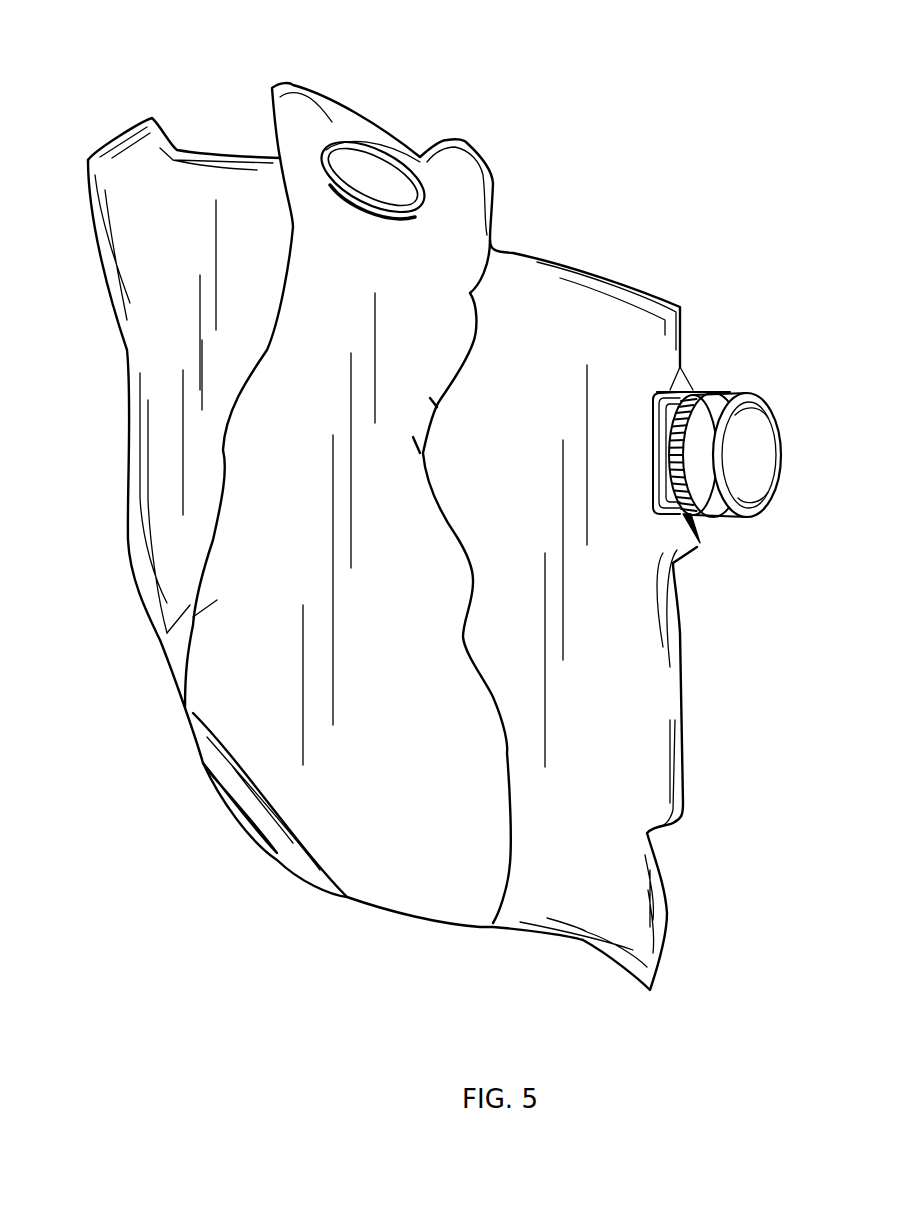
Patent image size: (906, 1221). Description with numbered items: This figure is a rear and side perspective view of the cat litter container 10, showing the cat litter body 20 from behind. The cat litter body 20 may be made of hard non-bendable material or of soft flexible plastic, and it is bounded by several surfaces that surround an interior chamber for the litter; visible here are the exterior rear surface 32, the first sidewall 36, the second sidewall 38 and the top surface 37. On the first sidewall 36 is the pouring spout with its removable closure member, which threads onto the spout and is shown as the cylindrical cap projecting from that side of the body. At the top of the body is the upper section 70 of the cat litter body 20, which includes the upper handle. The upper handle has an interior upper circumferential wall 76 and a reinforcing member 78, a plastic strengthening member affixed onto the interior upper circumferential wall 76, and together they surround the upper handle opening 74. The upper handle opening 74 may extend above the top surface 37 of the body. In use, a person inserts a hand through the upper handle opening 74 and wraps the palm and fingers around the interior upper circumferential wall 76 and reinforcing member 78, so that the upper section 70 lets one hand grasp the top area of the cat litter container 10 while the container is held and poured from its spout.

The cat litter container 10 is at (757, 366).
The cat litter body 20 is at (467, 228).
The exterior rear surface 32 is at (488, 433).
The first sidewall 36 is at (683, 325).
The top surface 37 is at (597, 267).
The second sidewall 38 is at (128, 400).
The upper section 70 is at (425, 126).
The upper handle opening 74 is at (385, 167).
The interior upper circumferential wall 76 is at (366, 150).
The reinforcing member 78 is at (400, 163).